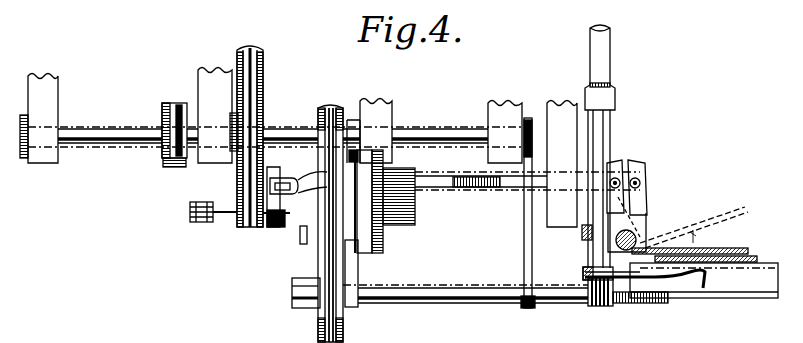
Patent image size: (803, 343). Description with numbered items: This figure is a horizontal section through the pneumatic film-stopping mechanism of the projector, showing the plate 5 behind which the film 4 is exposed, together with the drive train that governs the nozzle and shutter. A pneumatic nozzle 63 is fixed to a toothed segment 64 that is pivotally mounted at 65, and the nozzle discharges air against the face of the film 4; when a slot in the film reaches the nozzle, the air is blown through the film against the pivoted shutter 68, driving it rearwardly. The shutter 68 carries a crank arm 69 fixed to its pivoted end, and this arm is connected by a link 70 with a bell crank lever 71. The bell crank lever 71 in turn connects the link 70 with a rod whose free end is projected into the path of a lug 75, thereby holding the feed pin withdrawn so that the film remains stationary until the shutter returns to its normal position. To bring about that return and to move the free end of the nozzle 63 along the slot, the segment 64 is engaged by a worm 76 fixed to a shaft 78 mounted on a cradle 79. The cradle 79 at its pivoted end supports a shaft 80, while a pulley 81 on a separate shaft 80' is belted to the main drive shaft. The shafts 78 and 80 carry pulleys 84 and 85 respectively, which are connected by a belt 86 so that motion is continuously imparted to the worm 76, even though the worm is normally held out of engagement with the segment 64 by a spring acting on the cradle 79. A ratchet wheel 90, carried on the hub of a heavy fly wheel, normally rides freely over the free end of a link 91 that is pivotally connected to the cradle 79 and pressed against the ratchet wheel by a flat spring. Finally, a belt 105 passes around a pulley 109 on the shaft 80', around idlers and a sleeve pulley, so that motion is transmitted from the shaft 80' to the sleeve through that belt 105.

The shaft 80' is at (128, 154).
The belt 105 is at (173, 110).
The pulley 109 is at (165, 164).
The pulley 81 is at (262, 121).
The lug 75 is at (197, 222).
The bell crank lever 71 is at (226, 226).
The pulley 85 is at (318, 108).
The belt 86 is at (328, 222).
The shaft 80 is at (375, 121).
The ratchet wheel 90 is at (383, 247).
The link 91 is at (360, 246).
The link 70 is at (487, 189).
The cradle 79 is at (523, 247).
The shaft 78 is at (456, 290).
The pulley 84 is at (319, 334).
The pivot 65 is at (583, 273).
The crank arm 69 is at (637, 214).
The pivoted shutter 68 is at (690, 230).
The film 4 is at (750, 262).
The plate 5 is at (745, 284).
The pneumatic nozzle 63 is at (660, 277).
The worm 76 is at (592, 308).
The toothed segment 64 is at (630, 306).